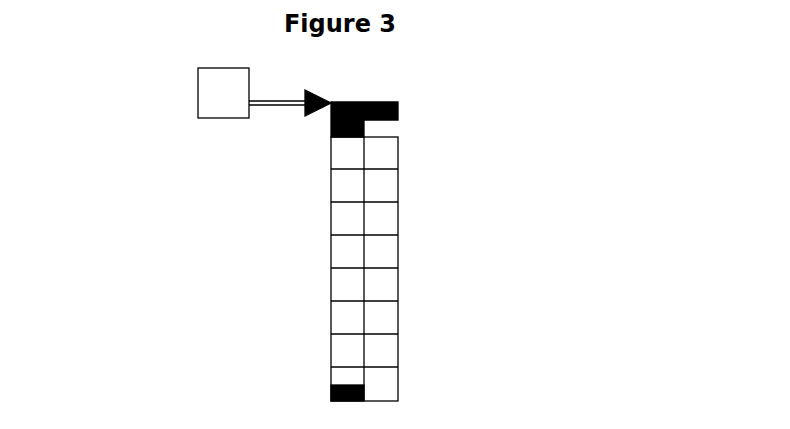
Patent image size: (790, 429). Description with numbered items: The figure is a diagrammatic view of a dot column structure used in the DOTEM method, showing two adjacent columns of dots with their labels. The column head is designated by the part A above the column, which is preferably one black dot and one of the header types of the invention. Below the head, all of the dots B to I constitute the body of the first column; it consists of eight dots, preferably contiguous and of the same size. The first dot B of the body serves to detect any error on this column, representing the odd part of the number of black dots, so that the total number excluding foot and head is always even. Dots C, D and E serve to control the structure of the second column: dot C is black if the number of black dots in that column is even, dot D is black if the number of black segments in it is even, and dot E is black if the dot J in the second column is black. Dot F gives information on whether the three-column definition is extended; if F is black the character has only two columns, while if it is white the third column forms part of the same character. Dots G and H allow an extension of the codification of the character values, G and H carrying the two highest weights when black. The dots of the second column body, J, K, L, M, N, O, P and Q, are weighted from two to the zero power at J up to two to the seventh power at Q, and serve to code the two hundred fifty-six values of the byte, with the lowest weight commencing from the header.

The column head A is at (264, 93).
The first dot of the body B is at (320, 152).
The dot 2 C is at (331, 185).
The dot 3 D is at (320, 218).
The dot 4 E is at (331, 251).
The dot 5 F is at (320, 285).
The dot 6 G is at (331, 318).
The dot 7 H is at (320, 351).
The dot 8 I is at (331, 384).
The dot weighted 2^0 J is at (409, 152).
The dot weighted 2^1 K is at (398, 185).
The dot weighted 2^2 L is at (409, 218).
The dot weighted 2^3 M is at (398, 251).
The dot weighted 2^4 N is at (409, 285).
The dot weighted 2^5 O is at (398, 318).
The dot weighted 2^6 P is at (409, 351).
The dot weighted 2^7 Q is at (398, 384).